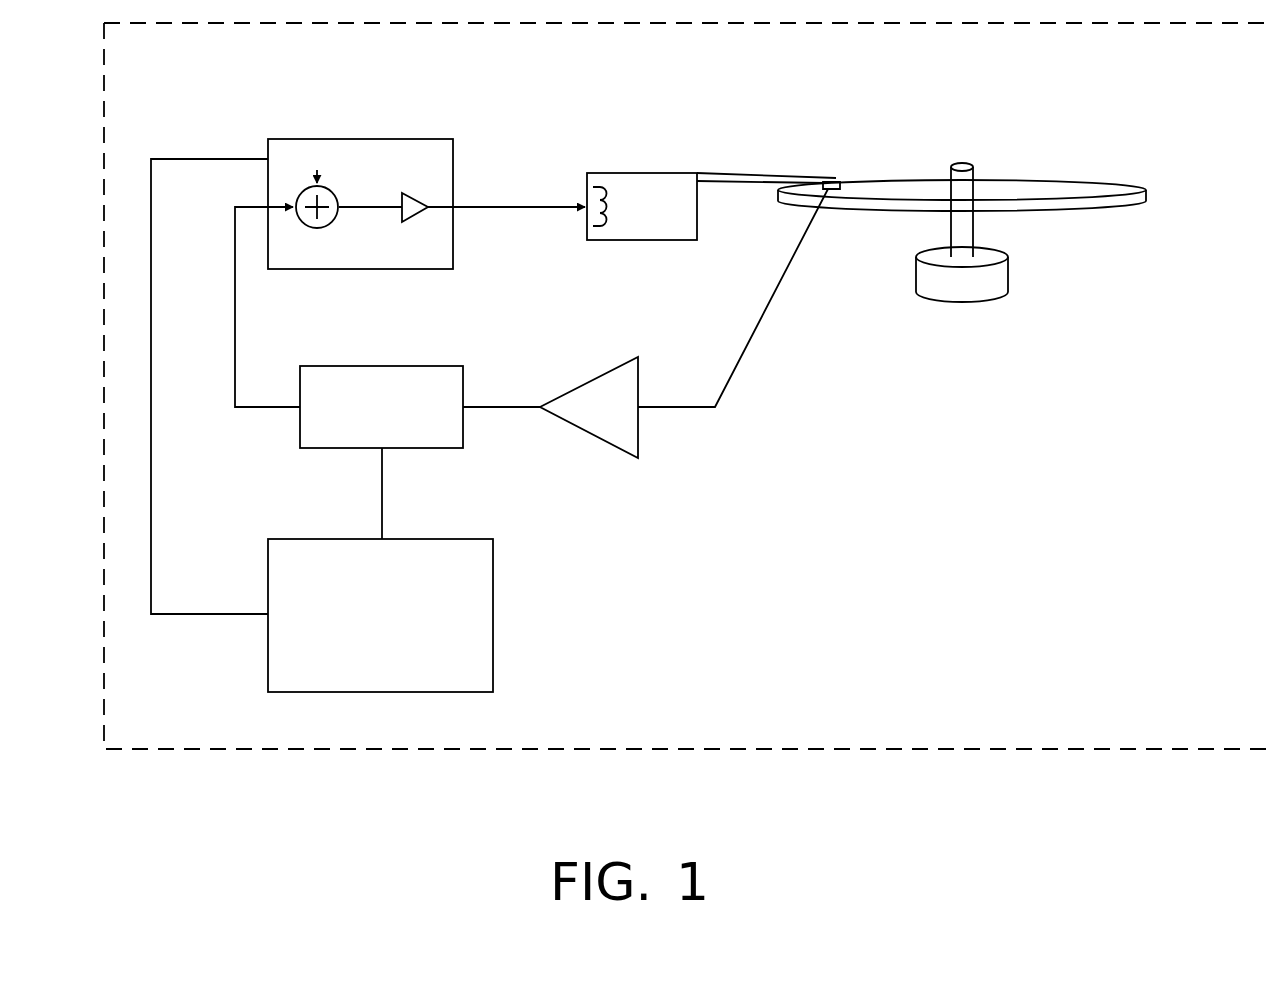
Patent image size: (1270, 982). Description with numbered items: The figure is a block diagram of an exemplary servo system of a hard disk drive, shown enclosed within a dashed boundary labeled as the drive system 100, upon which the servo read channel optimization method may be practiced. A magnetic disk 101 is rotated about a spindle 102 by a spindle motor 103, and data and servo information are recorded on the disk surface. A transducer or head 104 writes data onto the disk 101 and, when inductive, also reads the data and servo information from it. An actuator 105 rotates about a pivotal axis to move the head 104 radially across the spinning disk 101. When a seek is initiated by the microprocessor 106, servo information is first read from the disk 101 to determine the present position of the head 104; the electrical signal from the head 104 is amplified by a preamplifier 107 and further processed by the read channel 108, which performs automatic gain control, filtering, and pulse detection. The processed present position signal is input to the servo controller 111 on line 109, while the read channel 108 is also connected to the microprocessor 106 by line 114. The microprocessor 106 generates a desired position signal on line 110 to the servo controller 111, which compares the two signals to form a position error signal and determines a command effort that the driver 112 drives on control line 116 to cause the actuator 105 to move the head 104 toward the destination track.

The disk drive system 100 is at (420, 749).
The magnetic disk 101 is at (1147, 188).
The spindle 102 is at (960, 165).
The spindle motor 103 is at (1010, 278).
The head 104 is at (833, 178).
The actuator 105 is at (627, 172).
The microprocessor 106 is at (493, 588).
The preamplifier 107 is at (597, 363).
The read channel 108 is at (410, 365).
The line 109 is at (235, 328).
The line 110 is at (188, 158).
The servo controller 111 is at (320, 138).
The driver 112 is at (420, 212).
The read channel to microprocessor line 114 is at (383, 500).
The control line 116 is at (495, 202).